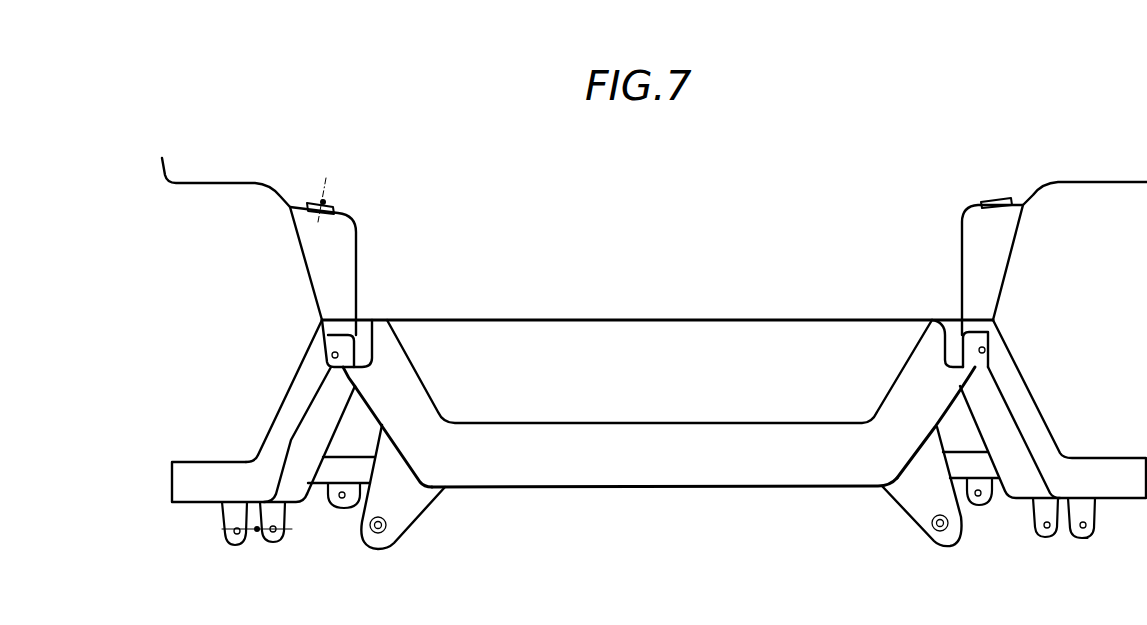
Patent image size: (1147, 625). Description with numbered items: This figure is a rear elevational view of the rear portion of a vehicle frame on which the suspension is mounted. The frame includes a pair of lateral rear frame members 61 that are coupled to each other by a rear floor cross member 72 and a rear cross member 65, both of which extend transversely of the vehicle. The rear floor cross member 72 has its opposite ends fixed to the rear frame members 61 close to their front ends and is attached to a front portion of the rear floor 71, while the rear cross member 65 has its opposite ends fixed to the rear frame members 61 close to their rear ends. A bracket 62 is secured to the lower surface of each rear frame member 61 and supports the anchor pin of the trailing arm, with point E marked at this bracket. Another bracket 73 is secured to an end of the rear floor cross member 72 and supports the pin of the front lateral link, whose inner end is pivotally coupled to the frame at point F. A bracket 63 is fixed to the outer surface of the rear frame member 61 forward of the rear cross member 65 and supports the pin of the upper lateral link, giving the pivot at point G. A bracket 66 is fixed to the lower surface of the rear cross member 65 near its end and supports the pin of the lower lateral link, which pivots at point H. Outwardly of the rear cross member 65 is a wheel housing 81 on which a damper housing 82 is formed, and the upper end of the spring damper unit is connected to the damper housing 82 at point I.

The wheel housing 81 is at (208, 186).
The damper housing 82 is at (358, 230).
The point I is at (325, 200).
The rear floor 71 is at (602, 319).
The bracket 63 is at (356, 334).
The point G is at (332, 352).
The rear frame member 61 is at (284, 424).
The bracket 62 is at (233, 510).
The point E is at (257, 533).
The rear floor cross member 72 is at (348, 465).
The bracket 73 is at (343, 508).
The point F is at (337, 500).
The bracket 66 is at (423, 497).
The point H is at (380, 533).
The rear cross member 65 is at (598, 468).